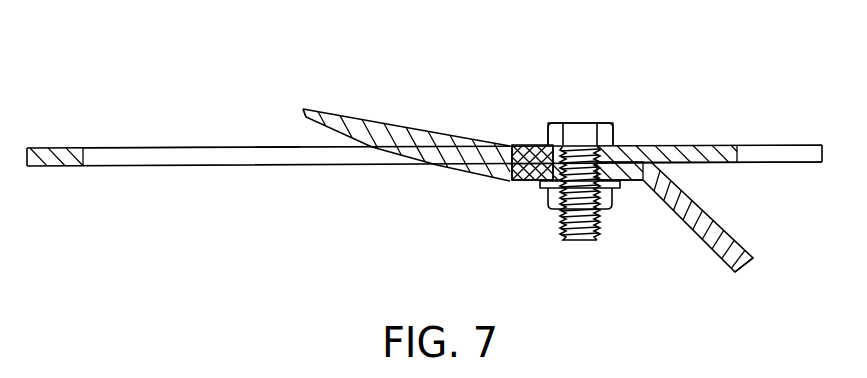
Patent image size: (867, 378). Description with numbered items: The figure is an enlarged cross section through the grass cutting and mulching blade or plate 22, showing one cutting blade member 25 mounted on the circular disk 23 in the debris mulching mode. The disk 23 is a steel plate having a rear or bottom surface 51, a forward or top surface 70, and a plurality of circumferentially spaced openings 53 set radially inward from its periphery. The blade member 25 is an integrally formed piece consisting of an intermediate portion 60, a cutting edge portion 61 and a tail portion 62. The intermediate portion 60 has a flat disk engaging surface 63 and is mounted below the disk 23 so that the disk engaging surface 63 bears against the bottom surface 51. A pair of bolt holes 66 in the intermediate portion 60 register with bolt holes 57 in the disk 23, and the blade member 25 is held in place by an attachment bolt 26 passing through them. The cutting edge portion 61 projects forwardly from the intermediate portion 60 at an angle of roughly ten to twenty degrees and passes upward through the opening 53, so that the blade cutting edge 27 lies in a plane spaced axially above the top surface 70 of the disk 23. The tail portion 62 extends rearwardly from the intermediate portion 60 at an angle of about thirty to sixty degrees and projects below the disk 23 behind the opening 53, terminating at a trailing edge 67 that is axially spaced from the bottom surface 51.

The grass cutting and mulching blade or plate 22 is at (550, 99).
The circular disk 23 is at (77, 148).
The cutting blade member 25 is at (525, 182).
The bolt 26 is at (617, 135).
The blade cutting edge 27 is at (304, 110).
The bottom surface of the disk 51 is at (717, 163).
The opening 53 is at (297, 158).
The bolt hole of the disk 57 is at (580, 130).
The intermediate portion 60 is at (530, 165).
The cutting edge portion 61 is at (407, 143).
The tail portion 62 is at (730, 233).
The disk engaging surface 63 is at (643, 148).
The bolt hole of the blade member 66 is at (601, 188).
The trailing edge 67 is at (750, 264).
The top surface of the disk 70 is at (173, 148).